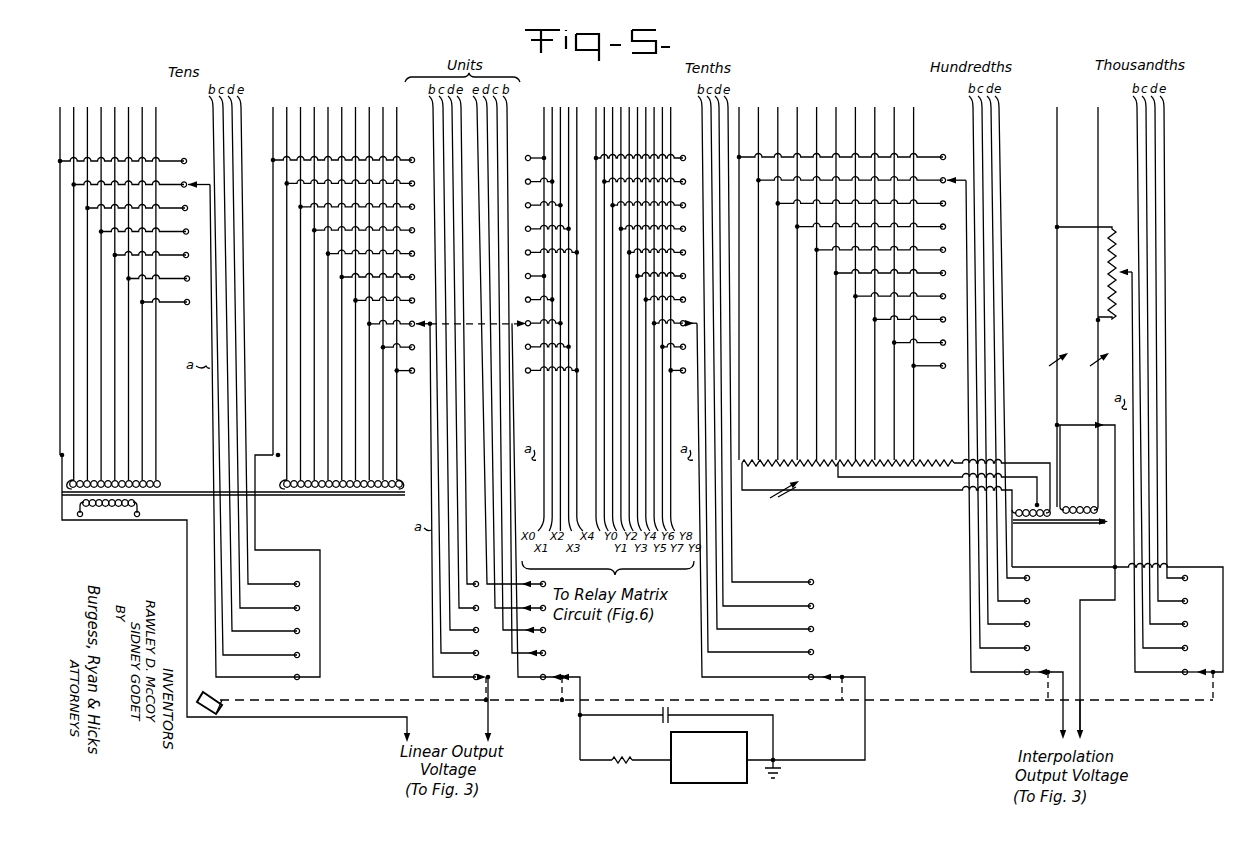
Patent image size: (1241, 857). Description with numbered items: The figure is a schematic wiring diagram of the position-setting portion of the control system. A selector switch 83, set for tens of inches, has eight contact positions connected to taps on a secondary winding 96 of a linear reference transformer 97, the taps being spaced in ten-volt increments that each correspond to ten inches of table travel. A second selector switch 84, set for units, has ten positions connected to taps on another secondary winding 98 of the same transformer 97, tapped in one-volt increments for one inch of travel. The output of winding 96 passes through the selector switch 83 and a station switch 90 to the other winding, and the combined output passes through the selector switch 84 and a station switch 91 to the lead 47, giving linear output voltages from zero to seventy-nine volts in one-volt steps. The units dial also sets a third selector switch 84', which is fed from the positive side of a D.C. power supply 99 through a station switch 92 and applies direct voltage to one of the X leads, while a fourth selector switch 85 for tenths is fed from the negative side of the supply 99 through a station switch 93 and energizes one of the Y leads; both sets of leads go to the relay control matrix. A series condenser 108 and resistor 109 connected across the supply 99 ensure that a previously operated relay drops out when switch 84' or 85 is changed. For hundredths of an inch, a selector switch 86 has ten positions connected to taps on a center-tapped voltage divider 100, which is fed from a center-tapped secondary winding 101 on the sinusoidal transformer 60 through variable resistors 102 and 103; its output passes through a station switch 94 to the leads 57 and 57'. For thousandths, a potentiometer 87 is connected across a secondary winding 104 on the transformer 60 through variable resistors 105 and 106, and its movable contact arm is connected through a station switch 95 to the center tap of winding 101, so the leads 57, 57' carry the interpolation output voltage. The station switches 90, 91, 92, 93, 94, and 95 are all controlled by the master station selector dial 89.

The selector switch 83 is at (190, 150).
The selector switch 84 is at (398, 293).
The selector switch 84' is at (547, 319).
The selector switch 85 is at (684, 153).
The selector switch 86 is at (943, 148).
The potentiometer 87 is at (1116, 163).
The master station selector dial 89 is at (222, 701).
The station switch 90 is at (326, 634).
The station switch 91 is at (434, 622).
The station switch 92 is at (552, 650).
The station switch 93 is at (822, 634).
The station switch 94 is at (1031, 633).
The station switch 95 is at (1190, 641).
The secondary winding 96 is at (162, 484).
The linear reference transformer 97 is at (112, 518).
The secondary winding 98 is at (343, 492).
The D.C. power supply 99 is at (730, 784).
The voltage divider 100 is at (906, 458).
The secondary winding 101 is at (1019, 521).
The variable resistor 102 is at (788, 498).
The variable resistor 103 is at (958, 458).
The secondary winding 104 is at (1080, 505).
The variable resistor 105 is at (1056, 359).
The variable resistor 106 is at (1089, 376).
The sinusoidal transformer 60 is at (1095, 526).
The series condenser 108 is at (661, 719).
The resistor 109 is at (625, 767).
The lead 47 is at (488, 712).
The lead 57 is at (1099, 717).
The lead 57' is at (1037, 704).